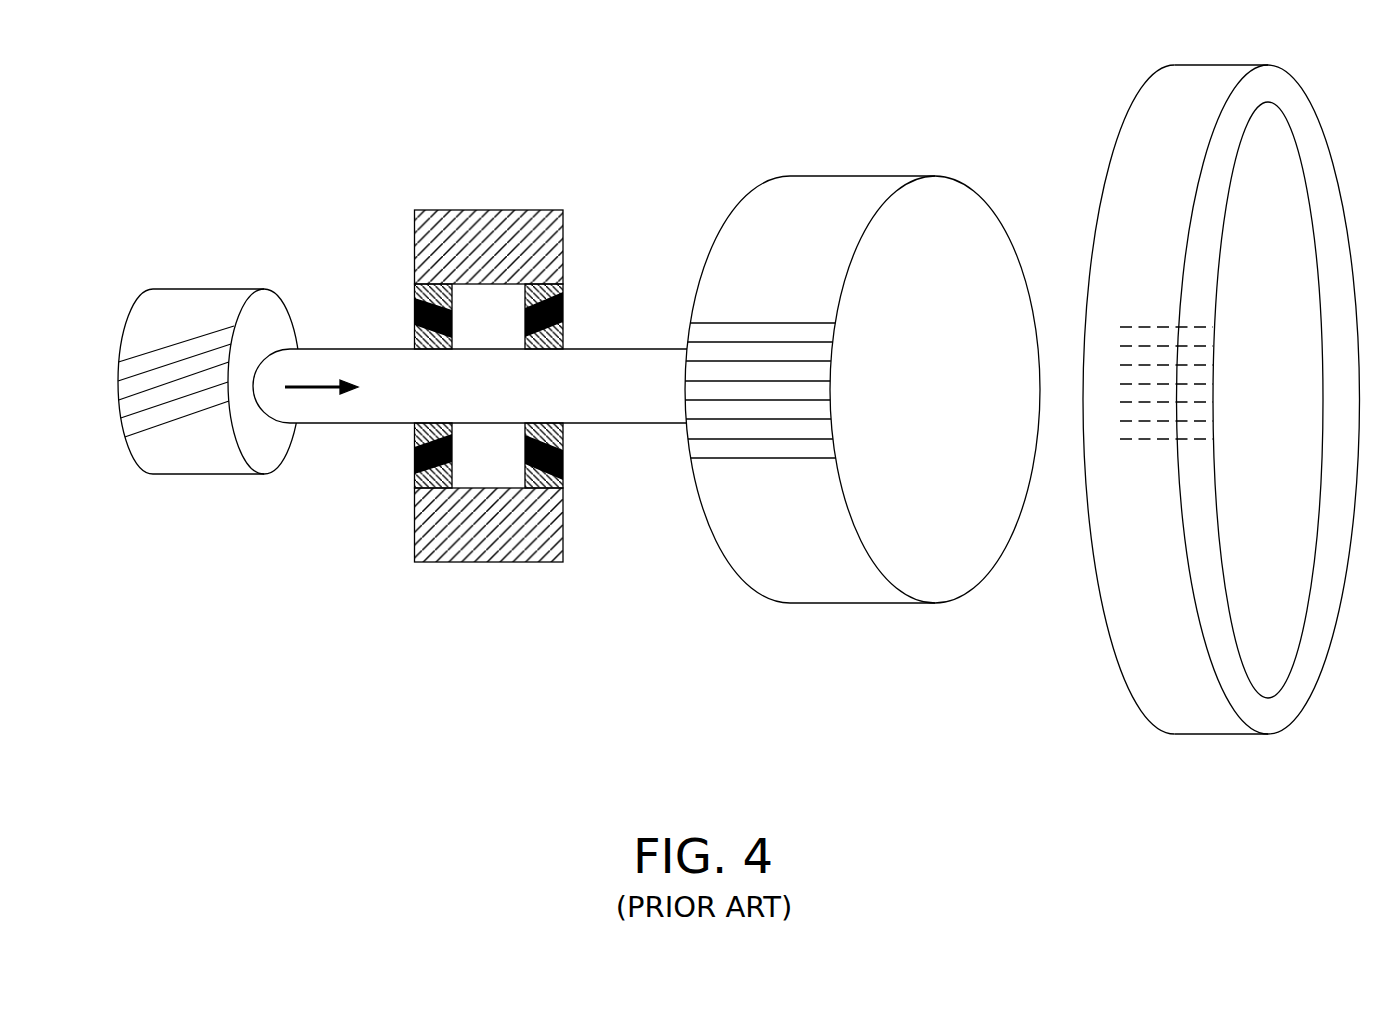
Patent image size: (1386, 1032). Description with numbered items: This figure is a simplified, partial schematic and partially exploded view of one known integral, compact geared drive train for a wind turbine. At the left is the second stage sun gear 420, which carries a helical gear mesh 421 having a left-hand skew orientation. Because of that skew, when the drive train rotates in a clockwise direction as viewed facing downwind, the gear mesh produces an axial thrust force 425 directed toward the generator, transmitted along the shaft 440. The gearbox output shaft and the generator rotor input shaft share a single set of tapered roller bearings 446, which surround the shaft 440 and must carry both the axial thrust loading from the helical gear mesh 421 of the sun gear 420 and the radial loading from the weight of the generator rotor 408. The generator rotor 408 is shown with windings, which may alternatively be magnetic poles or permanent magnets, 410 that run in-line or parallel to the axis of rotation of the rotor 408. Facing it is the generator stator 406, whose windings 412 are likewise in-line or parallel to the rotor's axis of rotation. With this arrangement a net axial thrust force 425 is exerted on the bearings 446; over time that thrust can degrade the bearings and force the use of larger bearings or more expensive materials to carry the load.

The generator stator 406 is at (1255, 402).
The generator rotor 408 is at (903, 402).
The windings 410 is at (758, 458).
The windings 412 is at (1150, 326).
The second stage sun gear 420 is at (200, 289).
The helical gear mesh 421 is at (162, 427).
The axial thrust force 425 is at (302, 393).
The shaft 440 is at (513, 402).
The tapered roller bearings 446 is at (386, 316).